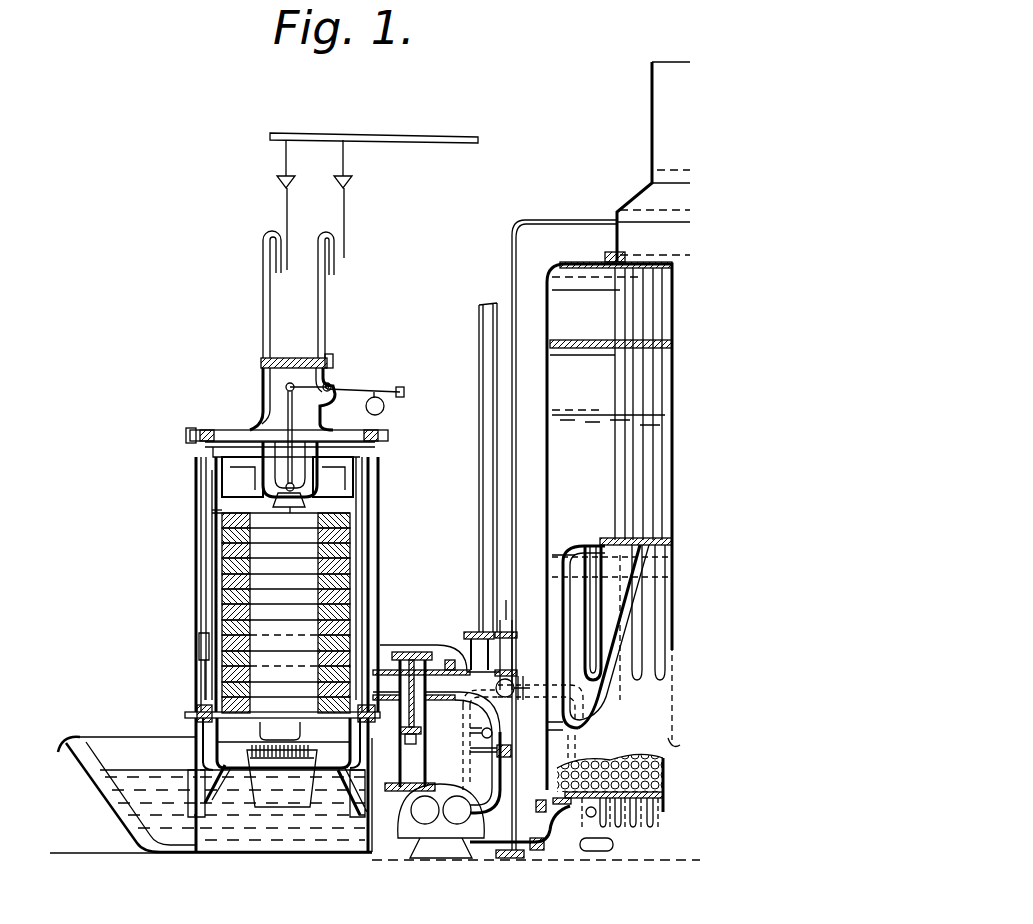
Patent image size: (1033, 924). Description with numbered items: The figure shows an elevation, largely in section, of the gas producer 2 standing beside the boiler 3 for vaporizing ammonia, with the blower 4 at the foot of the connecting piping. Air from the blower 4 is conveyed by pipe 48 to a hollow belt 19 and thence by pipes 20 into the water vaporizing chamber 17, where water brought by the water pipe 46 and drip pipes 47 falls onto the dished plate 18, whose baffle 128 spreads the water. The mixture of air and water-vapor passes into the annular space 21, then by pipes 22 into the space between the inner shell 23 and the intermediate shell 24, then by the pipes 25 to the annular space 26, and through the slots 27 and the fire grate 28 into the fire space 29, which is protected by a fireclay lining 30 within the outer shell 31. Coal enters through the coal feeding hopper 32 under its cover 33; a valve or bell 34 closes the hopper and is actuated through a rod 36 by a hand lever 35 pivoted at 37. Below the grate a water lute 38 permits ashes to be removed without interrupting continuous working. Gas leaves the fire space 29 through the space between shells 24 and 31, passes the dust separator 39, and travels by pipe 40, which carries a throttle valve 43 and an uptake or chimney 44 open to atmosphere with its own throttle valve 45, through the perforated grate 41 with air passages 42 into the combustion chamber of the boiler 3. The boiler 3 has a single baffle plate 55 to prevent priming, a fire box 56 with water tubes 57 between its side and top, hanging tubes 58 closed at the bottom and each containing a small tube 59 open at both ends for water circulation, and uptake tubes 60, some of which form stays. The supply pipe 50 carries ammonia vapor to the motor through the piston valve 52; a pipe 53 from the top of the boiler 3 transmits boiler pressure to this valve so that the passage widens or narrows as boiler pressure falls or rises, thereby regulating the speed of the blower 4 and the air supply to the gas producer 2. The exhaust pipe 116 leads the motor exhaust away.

The gas producer 2 is at (196, 610).
The boiler 3 is at (547, 438).
The blower 4 is at (415, 820).
The water vaporizing chamber 17 is at (210, 432).
The dished plate 18 is at (212, 449).
The hollow belt 19 is at (199, 650).
The pipes 20 is at (375, 508).
The annular space 21 is at (268, 485).
The pipes 22 is at (345, 478).
The inner shell 23 is at (222, 583).
The intermediate shell 24 is at (213, 528).
The pipes 25 is at (365, 740).
The annular space 26 is at (243, 768).
The slots 27 is at (270, 758).
The fire grate 28 is at (290, 758).
The fire space 29 is at (286, 613).
The fireclay lining 30 is at (250, 568).
The outer shell 31 is at (206, 556).
The coal feeding hopper 32 is at (270, 380).
The cover 33 is at (305, 358).
The valve or bell 34 is at (290, 508).
The hand lever 35 is at (360, 390).
The rod 36 is at (320, 410).
The pivot 37 is at (335, 385).
The water lute 38 is at (215, 794).
The dust separator 39 is at (410, 725).
The pipe 40 is at (468, 790).
The perforated grate 41 is at (598, 815).
The air passages 42 is at (614, 845).
The throttle valve 43 is at (511, 750).
The uptake or chimney 44 is at (480, 515).
The throttle valve 45 is at (478, 653).
The water pipe 46 is at (413, 138).
The drip pipes 47 is at (318, 300).
The pipe 48 is at (392, 647).
The supply pipe 50 is at (588, 816).
The piston valve 52 is at (513, 652).
The pipe 53 is at (548, 222).
The baffle plate 55 is at (585, 343).
The fire box 56 is at (563, 593).
The water tubes 57 is at (603, 712).
The hanging tubes 58 is at (662, 622).
The small tube 59 is at (588, 622).
The uptake tubes 60 is at (618, 473).
The exhaust pipe 116 is at (492, 735).
The baffle 128 is at (240, 440).